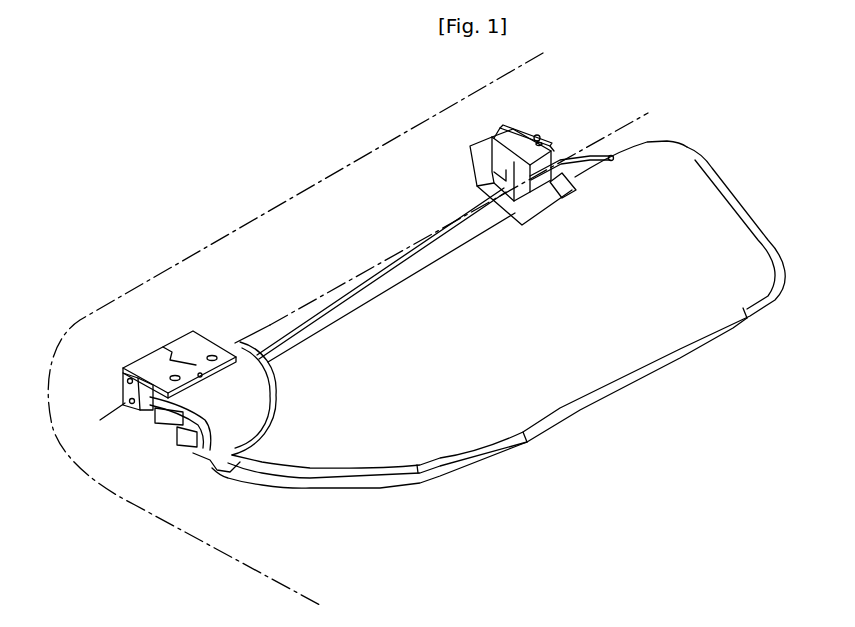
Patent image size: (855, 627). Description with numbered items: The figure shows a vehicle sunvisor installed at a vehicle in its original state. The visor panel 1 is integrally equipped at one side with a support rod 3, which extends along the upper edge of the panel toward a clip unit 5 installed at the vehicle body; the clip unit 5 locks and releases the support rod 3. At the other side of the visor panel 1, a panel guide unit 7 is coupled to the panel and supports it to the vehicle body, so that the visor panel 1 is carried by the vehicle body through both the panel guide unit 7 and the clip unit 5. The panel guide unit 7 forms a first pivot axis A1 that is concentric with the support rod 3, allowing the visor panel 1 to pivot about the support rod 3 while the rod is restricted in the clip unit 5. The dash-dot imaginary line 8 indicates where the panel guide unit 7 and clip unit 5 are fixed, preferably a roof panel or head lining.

The visor panel 1 is at (643, 352).
The support rod 3 is at (563, 158).
The clip unit 5 is at (520, 128).
The panel guide unit 7 is at (167, 340).
The phantom outline 8 is at (220, 238).
The first pivot axis A1 is at (318, 300).